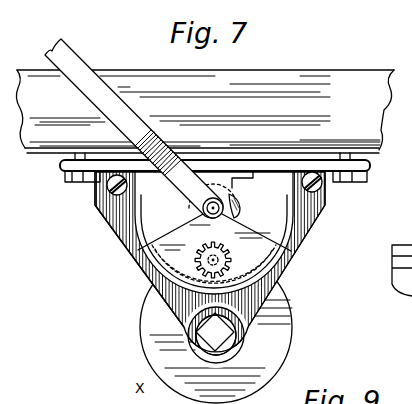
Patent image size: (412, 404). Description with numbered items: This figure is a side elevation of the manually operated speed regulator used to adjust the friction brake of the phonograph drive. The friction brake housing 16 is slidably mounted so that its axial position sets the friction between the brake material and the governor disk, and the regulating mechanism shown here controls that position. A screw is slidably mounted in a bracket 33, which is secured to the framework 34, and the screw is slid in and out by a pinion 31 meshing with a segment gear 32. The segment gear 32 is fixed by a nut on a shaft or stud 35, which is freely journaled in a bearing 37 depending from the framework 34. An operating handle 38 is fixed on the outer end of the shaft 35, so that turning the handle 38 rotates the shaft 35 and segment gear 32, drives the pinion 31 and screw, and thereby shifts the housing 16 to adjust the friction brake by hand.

The friction brake housing 16 is at (293, 343).
The pinion 31 is at (226, 247).
The segment gear 32 is at (254, 272).
The bracket 33 is at (323, 207).
The framework 34 is at (100, 167).
The shaft or stud 35 is at (203, 213).
The bearing 37 is at (236, 193).
The operating handle 38 is at (72, 58).